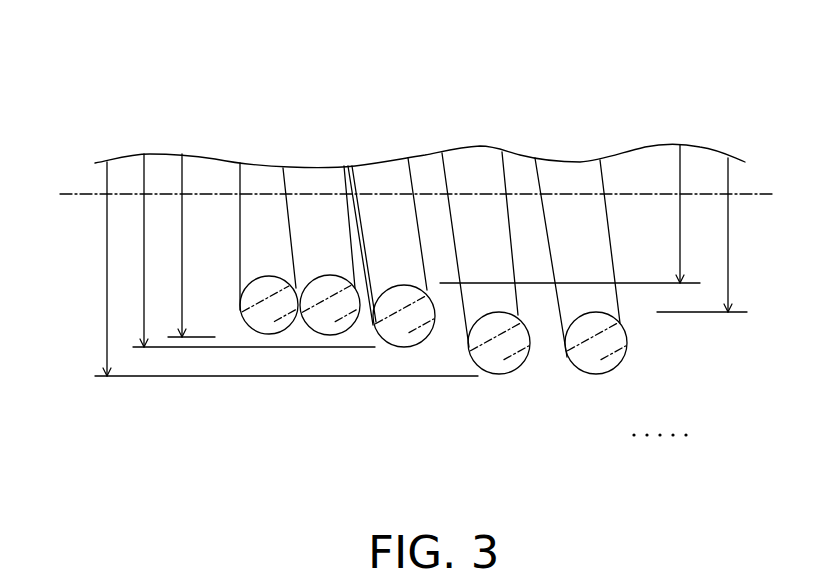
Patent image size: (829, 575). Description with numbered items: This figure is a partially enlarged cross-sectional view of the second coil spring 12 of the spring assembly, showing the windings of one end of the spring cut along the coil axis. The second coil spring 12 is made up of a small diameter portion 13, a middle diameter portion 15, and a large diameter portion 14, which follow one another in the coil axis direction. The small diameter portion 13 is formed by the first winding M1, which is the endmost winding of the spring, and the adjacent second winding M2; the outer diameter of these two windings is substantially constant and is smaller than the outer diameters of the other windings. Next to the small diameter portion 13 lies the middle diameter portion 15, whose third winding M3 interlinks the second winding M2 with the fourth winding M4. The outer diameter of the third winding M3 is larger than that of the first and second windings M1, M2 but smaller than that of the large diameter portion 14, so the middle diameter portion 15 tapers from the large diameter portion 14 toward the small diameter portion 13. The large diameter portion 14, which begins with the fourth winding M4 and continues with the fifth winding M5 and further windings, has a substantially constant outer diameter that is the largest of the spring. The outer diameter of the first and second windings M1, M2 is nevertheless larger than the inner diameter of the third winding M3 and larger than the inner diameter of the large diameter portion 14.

The second coil spring 12 is at (213, 126).
The small diameter portion 13 is at (300, 384).
The large diameter portion 14 is at (578, 403).
The middle diameter portion 15 is at (406, 389).
The first winding M1 is at (272, 307).
The second winding M2 is at (332, 310).
The third winding M3 is at (405, 320).
The fourth winding M4 is at (503, 340).
The fifth winding M5 is at (596, 343).